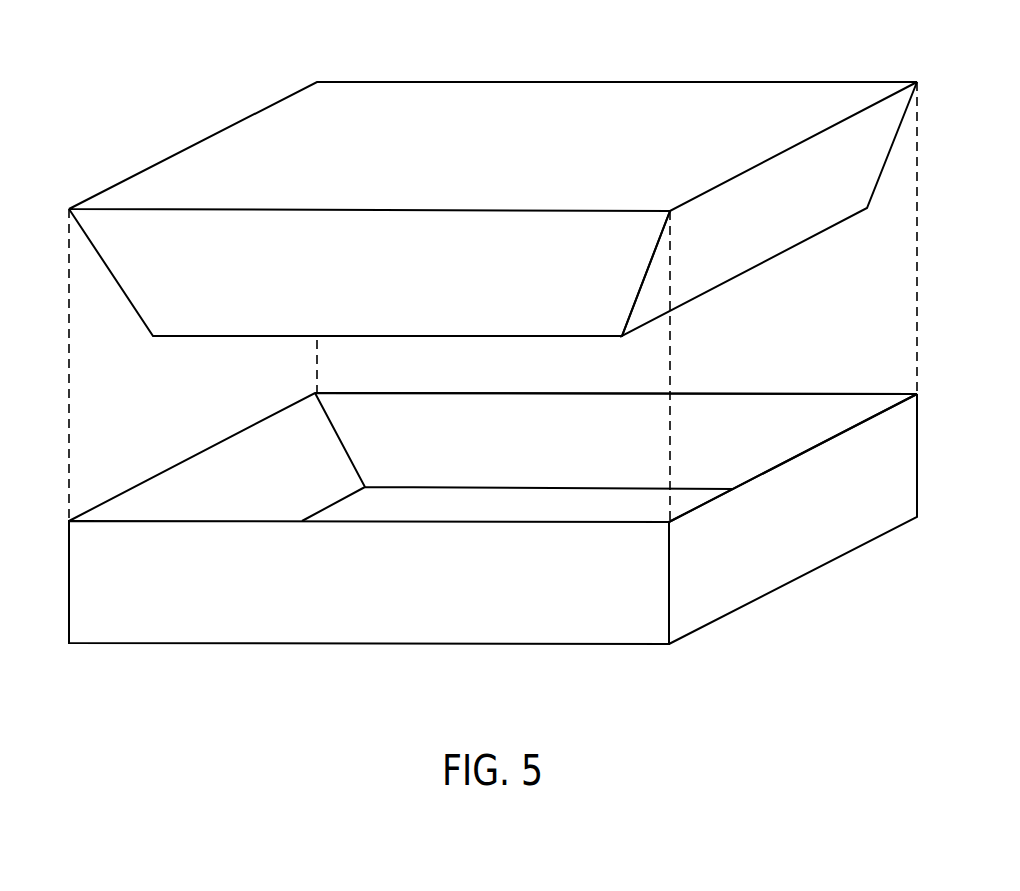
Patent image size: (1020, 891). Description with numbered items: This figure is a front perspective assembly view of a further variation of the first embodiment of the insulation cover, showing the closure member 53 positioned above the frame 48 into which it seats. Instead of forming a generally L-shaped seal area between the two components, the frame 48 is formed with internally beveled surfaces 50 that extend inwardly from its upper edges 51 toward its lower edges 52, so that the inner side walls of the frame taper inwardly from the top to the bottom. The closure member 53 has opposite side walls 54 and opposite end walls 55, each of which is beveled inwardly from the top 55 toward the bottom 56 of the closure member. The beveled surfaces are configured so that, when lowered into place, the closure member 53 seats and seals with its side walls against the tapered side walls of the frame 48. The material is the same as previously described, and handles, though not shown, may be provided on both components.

The frame 48 is at (393, 654).
The internally beveled surfaces 50 is at (492, 410).
The upper edges 51 is at (780, 390).
The lower edges 52 is at (528, 485).
The closure member 53 is at (563, 82).
The side walls 54 is at (250, 320).
The end walls 55 is at (480, 90).
The bottom of the closure member 56 is at (580, 338).